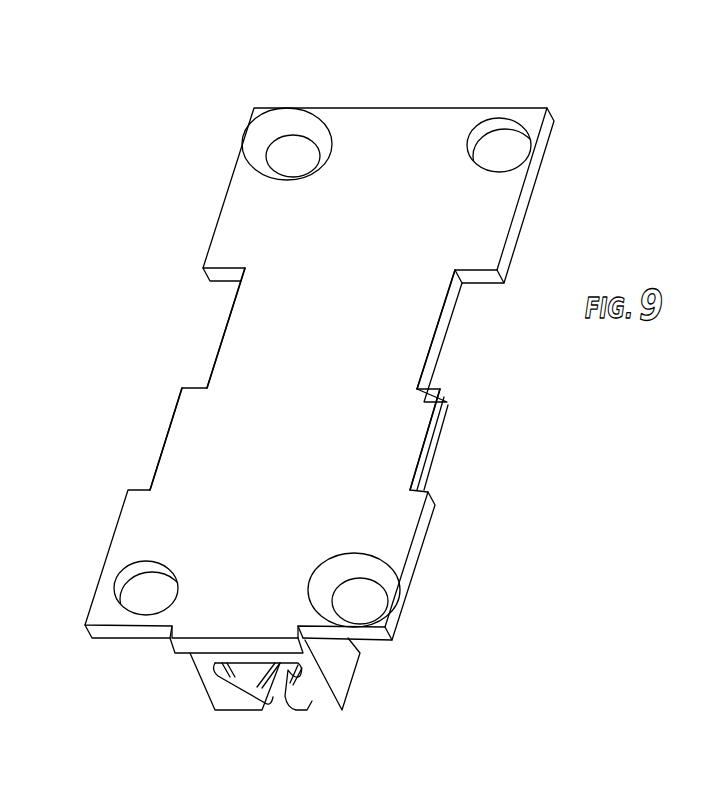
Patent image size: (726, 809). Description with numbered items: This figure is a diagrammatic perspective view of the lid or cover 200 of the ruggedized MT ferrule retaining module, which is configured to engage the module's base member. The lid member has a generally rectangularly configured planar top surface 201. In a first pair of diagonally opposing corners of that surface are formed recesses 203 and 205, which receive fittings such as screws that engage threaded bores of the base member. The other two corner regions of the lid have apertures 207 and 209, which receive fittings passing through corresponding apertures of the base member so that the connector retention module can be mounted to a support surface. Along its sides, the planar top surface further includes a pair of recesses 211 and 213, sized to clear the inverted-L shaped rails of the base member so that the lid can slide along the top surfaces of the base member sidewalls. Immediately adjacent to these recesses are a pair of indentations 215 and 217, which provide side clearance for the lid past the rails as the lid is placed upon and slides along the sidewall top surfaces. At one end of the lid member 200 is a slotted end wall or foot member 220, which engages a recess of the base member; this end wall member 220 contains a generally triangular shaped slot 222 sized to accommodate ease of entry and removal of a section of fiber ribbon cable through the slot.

The lid or cover 200 is at (577, 207).
The planar top surface 201 is at (198, 402).
The recess 203 is at (282, 120).
The recess 205 is at (380, 573).
The aperture 207 is at (125, 597).
The aperture 209 is at (497, 128).
The recess 211 is at (230, 312).
The recess 213 is at (445, 322).
The indentation 215 is at (165, 438).
The indentation 217 is at (436, 440).
The slotted end wall or foot member 220 is at (317, 705).
The triangular shaped slot 222 is at (276, 703).